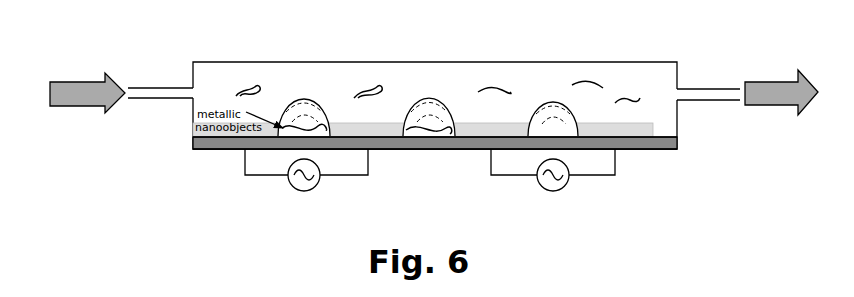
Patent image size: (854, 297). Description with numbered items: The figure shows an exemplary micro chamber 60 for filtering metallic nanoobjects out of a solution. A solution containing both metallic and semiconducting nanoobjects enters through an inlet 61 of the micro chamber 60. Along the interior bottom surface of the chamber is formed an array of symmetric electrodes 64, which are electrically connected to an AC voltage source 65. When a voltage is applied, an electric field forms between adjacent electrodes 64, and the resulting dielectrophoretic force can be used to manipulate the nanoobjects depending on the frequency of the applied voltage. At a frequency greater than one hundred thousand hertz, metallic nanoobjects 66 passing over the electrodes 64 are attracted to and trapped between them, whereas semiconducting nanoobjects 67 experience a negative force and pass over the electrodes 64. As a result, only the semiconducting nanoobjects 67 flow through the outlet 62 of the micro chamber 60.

The micro chamber 60 is at (612, 58).
The inlet 61 is at (153, 80).
The outlet 62 is at (718, 82).
The symmetric electrodes 64 is at (398, 140).
The AC voltage source 65 is at (284, 181).
The metallic nanoobjects 66 is at (462, 113).
The semiconducting nanoobjects 67 is at (640, 108).